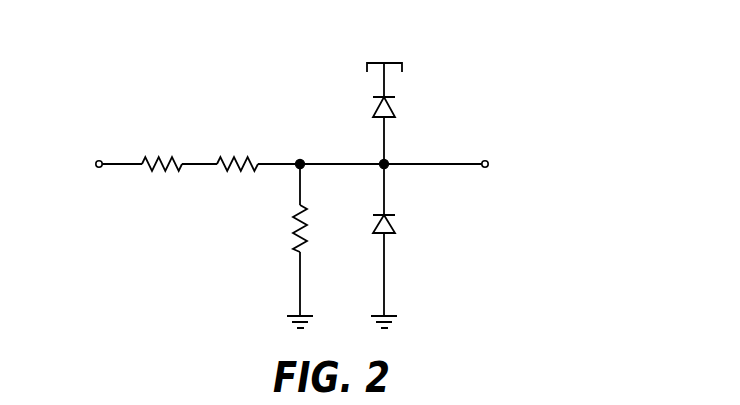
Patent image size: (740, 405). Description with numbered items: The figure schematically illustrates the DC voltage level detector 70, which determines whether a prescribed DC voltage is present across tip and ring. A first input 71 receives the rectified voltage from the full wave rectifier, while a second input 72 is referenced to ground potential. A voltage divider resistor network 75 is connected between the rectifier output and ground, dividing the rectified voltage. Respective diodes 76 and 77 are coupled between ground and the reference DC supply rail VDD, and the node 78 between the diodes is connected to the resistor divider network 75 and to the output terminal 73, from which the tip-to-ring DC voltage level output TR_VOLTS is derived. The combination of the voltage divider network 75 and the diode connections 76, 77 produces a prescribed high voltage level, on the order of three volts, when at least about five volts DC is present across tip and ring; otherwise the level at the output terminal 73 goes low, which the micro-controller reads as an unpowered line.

The DC voltage level detector 70 is at (447, 101).
The first input 71 is at (98, 159).
The second input 72 is at (283, 322).
The output terminal 73 is at (486, 168).
The voltage divider resistor network 75 is at (292, 268).
The diode 76 is at (375, 108).
The diode 77 is at (396, 228).
The node 78 is at (382, 160).